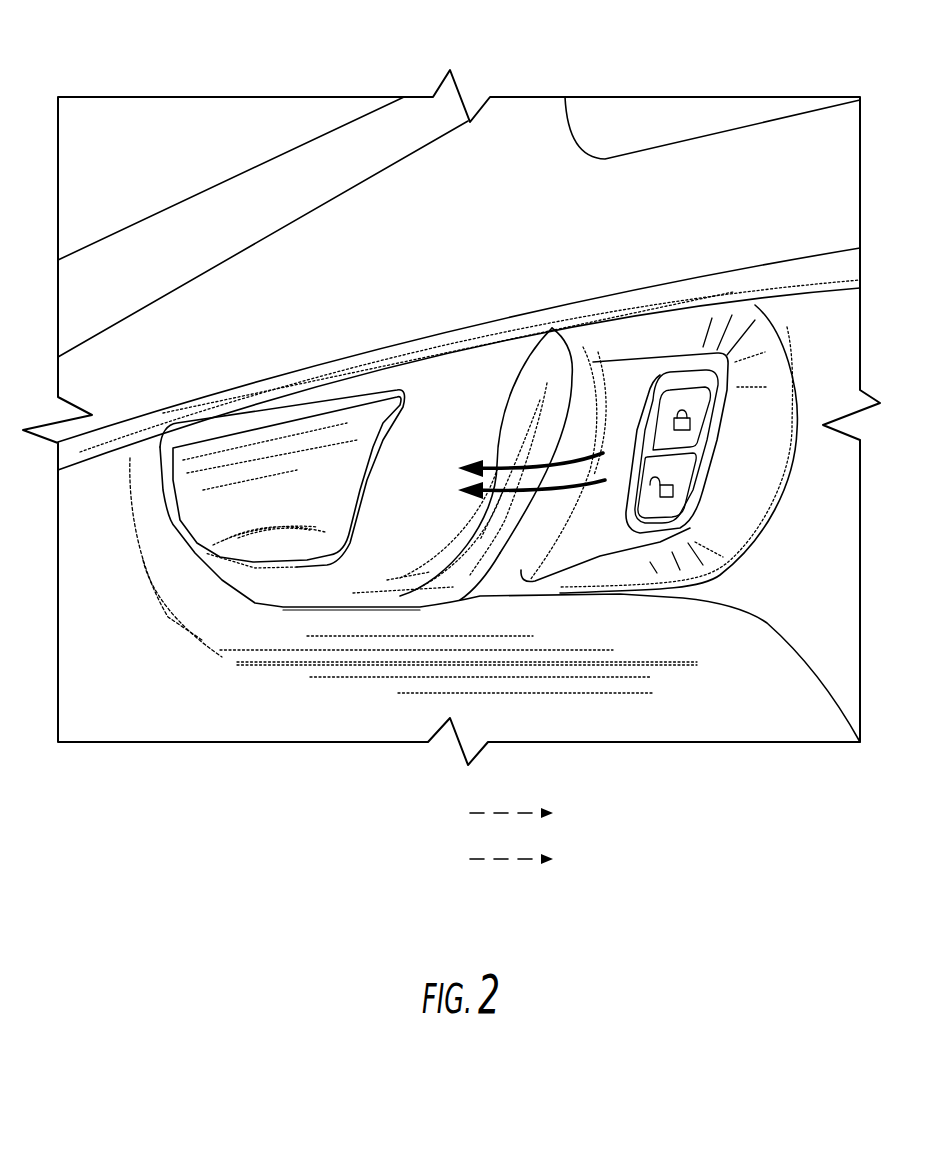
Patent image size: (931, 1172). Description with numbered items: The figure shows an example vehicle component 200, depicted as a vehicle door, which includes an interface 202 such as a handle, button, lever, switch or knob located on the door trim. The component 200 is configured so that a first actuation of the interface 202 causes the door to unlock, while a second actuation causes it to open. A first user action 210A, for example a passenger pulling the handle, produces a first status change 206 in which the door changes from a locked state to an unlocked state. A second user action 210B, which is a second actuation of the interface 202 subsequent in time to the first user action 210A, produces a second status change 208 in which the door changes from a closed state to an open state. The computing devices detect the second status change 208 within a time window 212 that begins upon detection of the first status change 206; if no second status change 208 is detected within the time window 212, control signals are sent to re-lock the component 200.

The component 200 is at (106, 79).
The interface 202 is at (397, 552).
The first user action 210A is at (548, 327).
The second user action 210B is at (500, 553).
The first status change 206 is at (365, 813).
The second status change 208 is at (365, 858).
The time window 212 is at (430, 909).